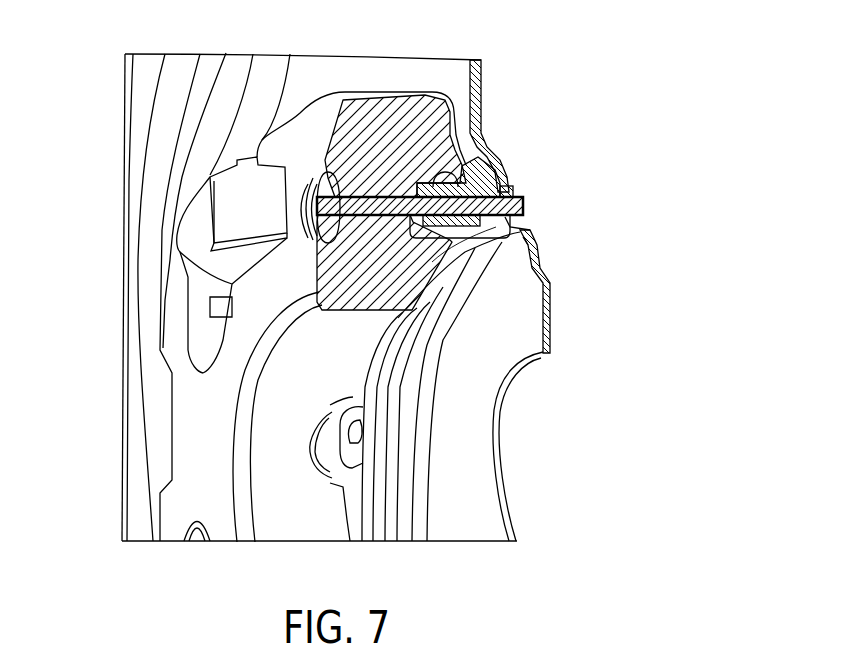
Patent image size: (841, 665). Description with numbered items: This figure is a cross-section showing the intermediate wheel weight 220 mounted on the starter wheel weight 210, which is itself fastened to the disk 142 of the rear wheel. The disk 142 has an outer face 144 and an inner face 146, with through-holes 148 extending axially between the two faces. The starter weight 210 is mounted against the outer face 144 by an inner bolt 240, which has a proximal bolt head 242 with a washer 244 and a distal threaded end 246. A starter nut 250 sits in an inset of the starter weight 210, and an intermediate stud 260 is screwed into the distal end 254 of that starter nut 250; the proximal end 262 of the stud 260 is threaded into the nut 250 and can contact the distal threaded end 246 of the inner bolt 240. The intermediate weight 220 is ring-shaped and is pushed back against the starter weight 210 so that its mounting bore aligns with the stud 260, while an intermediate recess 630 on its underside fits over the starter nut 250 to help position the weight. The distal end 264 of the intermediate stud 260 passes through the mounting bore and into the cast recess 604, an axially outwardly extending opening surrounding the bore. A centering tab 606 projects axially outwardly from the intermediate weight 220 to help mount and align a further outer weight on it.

The disk 142 is at (142, 396).
The outer face 144 is at (470, 517).
The inner face 146 is at (553, 348).
The through-holes 148 is at (510, 221).
The starter wheel weight 210 is at (357, 430).
The intermediate wheel weight 220 is at (400, 265).
The inner bolt 240 is at (547, 206).
The proximal bolt head 242 is at (521, 193).
The washer 244 is at (514, 188).
The distal threaded end 246 is at (531, 291).
The starter nut 250 is at (476, 160).
The distal end 254 is at (415, 178).
The intermediate stud 260 is at (369, 170).
The proximal end 262 is at (460, 222).
The distal end 264 is at (314, 178).
The cast recess 604 is at (198, 355).
The centering tab 606 is at (187, 225).
The intermediate recess 630 is at (432, 222).